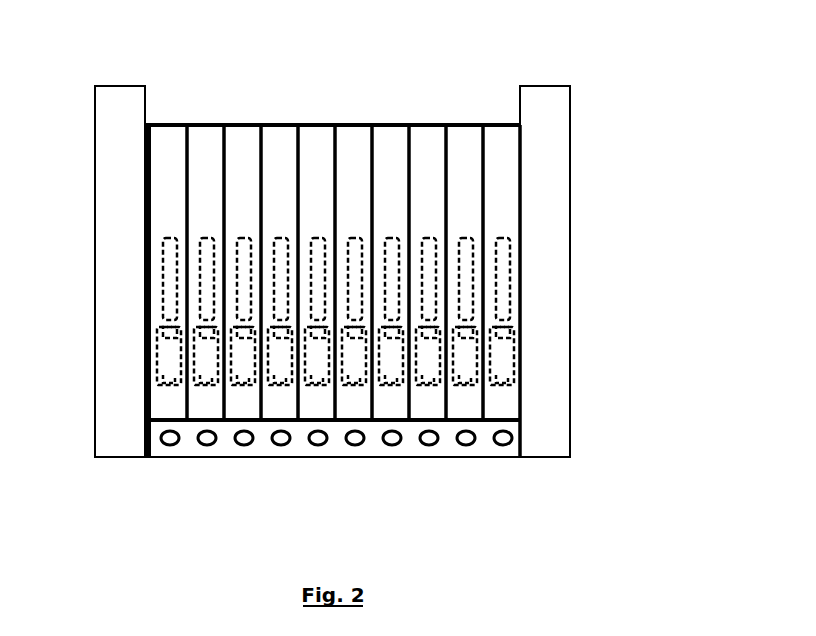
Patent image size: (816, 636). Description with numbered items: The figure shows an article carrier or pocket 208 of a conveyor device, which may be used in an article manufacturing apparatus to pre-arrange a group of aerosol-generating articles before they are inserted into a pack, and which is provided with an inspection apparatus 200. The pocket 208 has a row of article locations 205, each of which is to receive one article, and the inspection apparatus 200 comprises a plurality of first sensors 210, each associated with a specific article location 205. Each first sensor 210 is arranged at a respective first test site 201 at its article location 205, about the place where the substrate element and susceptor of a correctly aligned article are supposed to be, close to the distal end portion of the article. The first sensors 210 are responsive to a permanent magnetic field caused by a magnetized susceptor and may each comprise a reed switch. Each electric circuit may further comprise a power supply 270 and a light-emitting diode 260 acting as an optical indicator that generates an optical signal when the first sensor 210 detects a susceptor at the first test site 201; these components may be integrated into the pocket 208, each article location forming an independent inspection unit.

The inspection apparatus 200 is at (541, 373).
The first test site 201 is at (144, 360).
The article location 205 is at (173, 112).
The pocket 208 is at (553, 135).
The first sensor 210 is at (172, 385).
The light-emitting diode 260 is at (161, 457).
The power supply 270 is at (152, 265).